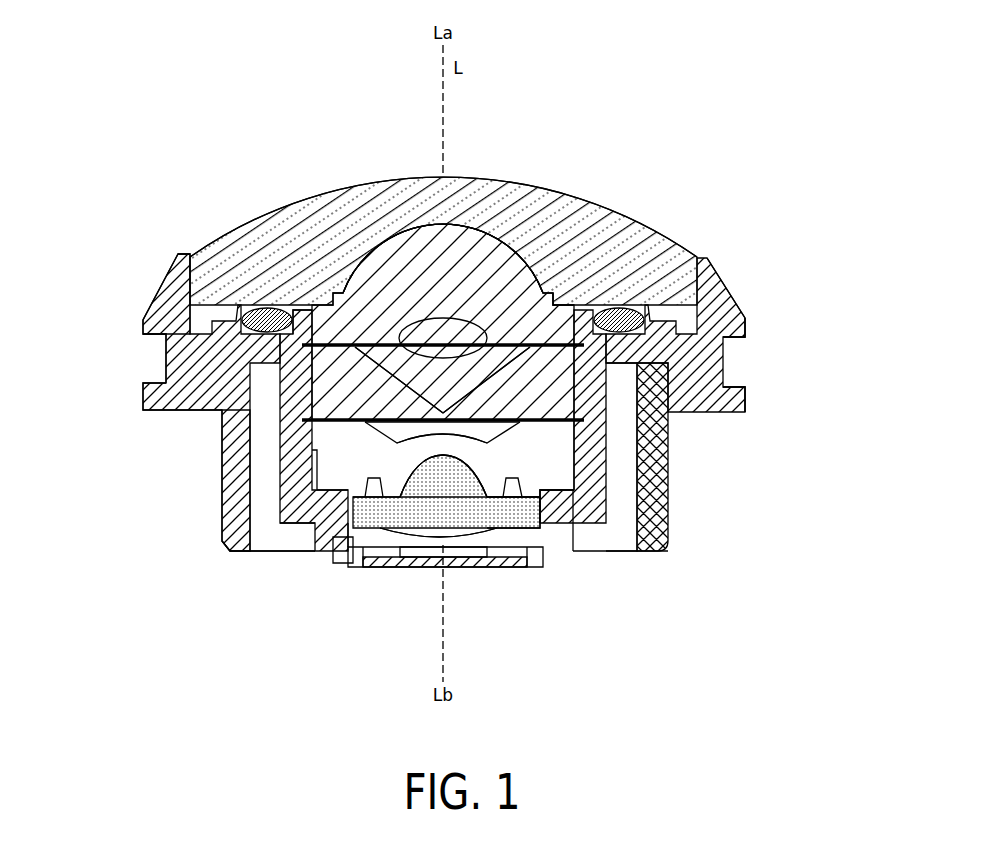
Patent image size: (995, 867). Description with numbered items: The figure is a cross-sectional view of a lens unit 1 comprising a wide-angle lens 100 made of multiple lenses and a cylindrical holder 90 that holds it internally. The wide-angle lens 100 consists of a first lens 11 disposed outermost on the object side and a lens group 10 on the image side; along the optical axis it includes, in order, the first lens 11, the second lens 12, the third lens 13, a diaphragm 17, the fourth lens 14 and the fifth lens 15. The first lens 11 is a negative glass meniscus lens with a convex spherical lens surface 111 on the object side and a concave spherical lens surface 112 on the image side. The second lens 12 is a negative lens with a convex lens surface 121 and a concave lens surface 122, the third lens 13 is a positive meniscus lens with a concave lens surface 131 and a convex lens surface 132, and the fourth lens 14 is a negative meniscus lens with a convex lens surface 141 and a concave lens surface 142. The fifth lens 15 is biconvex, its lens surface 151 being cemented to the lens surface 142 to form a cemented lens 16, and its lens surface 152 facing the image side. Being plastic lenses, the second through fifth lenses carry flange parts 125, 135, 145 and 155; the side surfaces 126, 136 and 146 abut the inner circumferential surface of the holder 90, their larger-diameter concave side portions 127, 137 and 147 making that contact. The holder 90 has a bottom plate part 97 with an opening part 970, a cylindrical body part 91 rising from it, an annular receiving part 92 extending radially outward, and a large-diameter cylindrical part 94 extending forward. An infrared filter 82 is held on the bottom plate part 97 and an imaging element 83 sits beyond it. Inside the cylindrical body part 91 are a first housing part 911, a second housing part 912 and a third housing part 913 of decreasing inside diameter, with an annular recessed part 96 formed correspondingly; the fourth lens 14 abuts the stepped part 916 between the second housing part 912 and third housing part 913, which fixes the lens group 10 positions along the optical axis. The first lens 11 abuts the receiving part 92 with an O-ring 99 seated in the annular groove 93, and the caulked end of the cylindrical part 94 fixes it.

The lens unit 1 is at (232, 141).
The wide-angle lens 100 is at (664, 224).
The lens group 10 is at (222, 428).
The first lens 11 is at (356, 186).
The lens surface on the object side 111 is at (388, 178).
The lens surface on the image side 112 is at (430, 228).
The second lens 12 is at (447, 300).
The lens surface on the object side 121 is at (465, 322).
The lens surface on the image side 122 is at (505, 300).
The flange part 125 is at (608, 252).
The side surface 126 is at (723, 352).
The concave side portion 127 is at (734, 327).
The third lens 13 is at (600, 405).
The lens surface on the object side 131 is at (540, 290).
The lens surface on the image side 132 is at (560, 300).
The flange part 135 is at (600, 425).
The side surface 136 is at (720, 382).
The concave side portion 137 is at (734, 399).
The fourth lens 14 is at (600, 488).
The lens surface on the object side 141 is at (408, 545).
The lens surface on the image side 142 is at (462, 535).
The flange part 145 is at (610, 470).
The side surface 146 is at (606, 492).
The concave side portion 147 is at (557, 506).
The fifth lens 15 is at (600, 528).
The lens surface on the object side 151 is at (438, 576).
The lens surface on the image side 152 is at (443, 476).
The flange part 155 is at (560, 547).
The cemented lens 16 is at (769, 530).
The diaphragm 17 is at (610, 447).
The infrared filter 82 is at (520, 565).
The imaging element 83 is at (438, 562).
The holder 90 is at (740, 296).
The cylindrical body part 91 is at (222, 478).
The receiving part 92 is at (165, 362).
The annular groove 93 is at (165, 347).
The cylindrical part 94 is at (168, 290).
The recessed part 96 is at (222, 508).
The bottom plate part 97 is at (340, 557).
The opening part 970 is at (378, 552).
The O-ring 99 is at (262, 305).
The first housing part 911 is at (328, 300).
The second housing part 912 is at (298, 553).
The third housing part 913 is at (322, 512).
The stepped part 916 is at (308, 540).